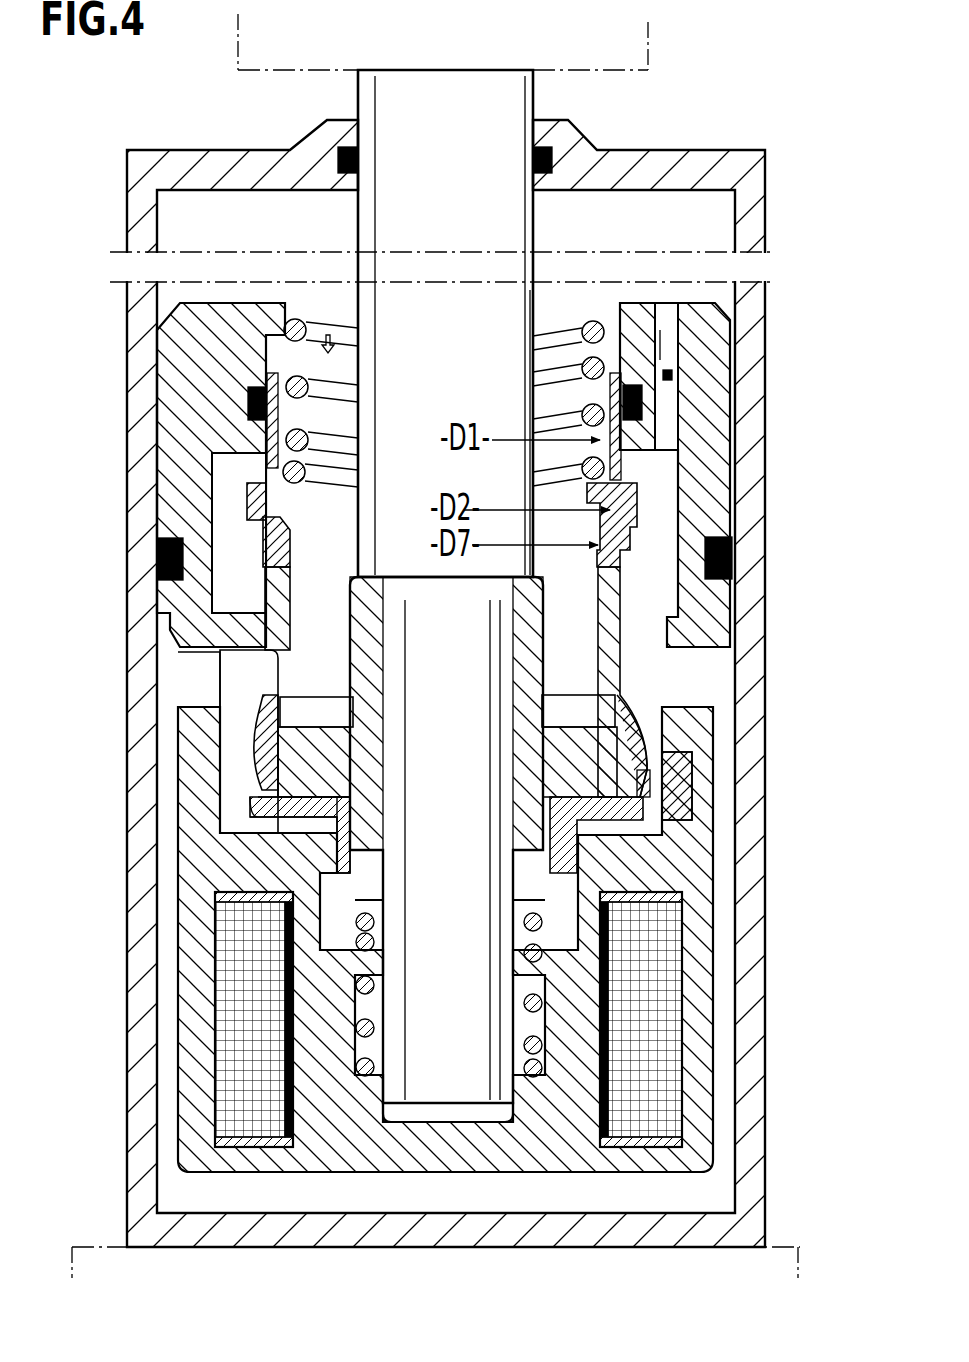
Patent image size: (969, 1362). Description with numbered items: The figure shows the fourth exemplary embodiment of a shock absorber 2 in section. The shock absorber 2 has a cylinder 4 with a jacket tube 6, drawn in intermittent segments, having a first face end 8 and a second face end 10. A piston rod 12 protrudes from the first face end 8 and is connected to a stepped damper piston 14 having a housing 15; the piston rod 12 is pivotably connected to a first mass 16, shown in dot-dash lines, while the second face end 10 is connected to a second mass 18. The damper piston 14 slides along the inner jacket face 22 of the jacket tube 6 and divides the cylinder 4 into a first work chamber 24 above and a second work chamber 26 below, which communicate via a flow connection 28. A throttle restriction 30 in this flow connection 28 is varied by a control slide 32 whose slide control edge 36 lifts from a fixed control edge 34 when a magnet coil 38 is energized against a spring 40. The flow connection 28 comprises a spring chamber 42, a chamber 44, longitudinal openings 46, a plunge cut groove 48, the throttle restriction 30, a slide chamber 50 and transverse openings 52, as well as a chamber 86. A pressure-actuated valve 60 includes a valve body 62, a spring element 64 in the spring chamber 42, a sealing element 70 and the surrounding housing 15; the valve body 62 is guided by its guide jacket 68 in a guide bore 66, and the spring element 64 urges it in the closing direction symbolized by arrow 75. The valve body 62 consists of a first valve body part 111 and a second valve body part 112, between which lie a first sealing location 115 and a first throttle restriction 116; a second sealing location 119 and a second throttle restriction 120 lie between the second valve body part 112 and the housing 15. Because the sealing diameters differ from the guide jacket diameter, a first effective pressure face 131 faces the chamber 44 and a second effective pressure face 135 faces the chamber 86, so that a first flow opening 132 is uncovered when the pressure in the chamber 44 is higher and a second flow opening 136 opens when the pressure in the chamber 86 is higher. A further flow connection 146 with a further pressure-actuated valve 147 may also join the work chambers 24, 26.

The shock absorber 2 is at (748, 110).
The cylinder 4 is at (120, 400).
The jacket tube 6 is at (138, 467).
The first face end 8 is at (660, 166).
The second face end 10 is at (552, 1233).
The piston rod 12 is at (445, 323).
The damper piston 14 is at (172, 958).
The housing 15 is at (234, 305).
The first mass 16 is at (443, 41).
The second mass 18 is at (436, 1273).
The inner jacket face 22 is at (168, 1186).
The first work chamber 24 is at (255, 221).
The second work chamber 26 is at (445, 1193).
The flow connection 28 is at (557, 292).
The throttle restriction 30 is at (634, 684).
The control slide 32 is at (266, 728).
The fixed control edge 34 is at (345, 728).
The slide control edge 36 is at (106, 708).
The magnet coil 38 is at (668, 1012).
The spring 40 is at (372, 1016).
The spring chamber 42 is at (552, 392).
The chamber 44 is at (348, 416).
The longitudinal openings 46 is at (324, 672).
The plunge cut groove 48 is at (345, 722).
The slide chamber 50 is at (232, 782).
The transverse openings 52 is at (215, 652).
The pressure-actuated valve 60 is at (520, 526).
The valve body 62 is at (228, 482).
The spring element 64 is at (590, 332).
The guide bore 66 is at (612, 342).
The guide jacket 68 is at (616, 472).
The sealing element 70 is at (242, 397).
The arrow 75 is at (345, 330).
The chamber 86 is at (668, 596).
The first valve body part 111 is at (356, 394).
The second valve body part 112 is at (342, 614).
The first sealing location 115 is at (350, 472).
The first throttle restriction 116 is at (240, 548).
The second sealing location 119 is at (262, 542).
The second throttle restriction 120 is at (345, 612).
The first effective pressure face 131 is at (640, 502).
The first flow opening 132 is at (345, 500).
The second effective pressure face 135 is at (690, 538).
The second flow opening 136 is at (170, 560).
The further flow connection 146 is at (680, 347).
The further pressure-actuated valve 147 is at (674, 378).